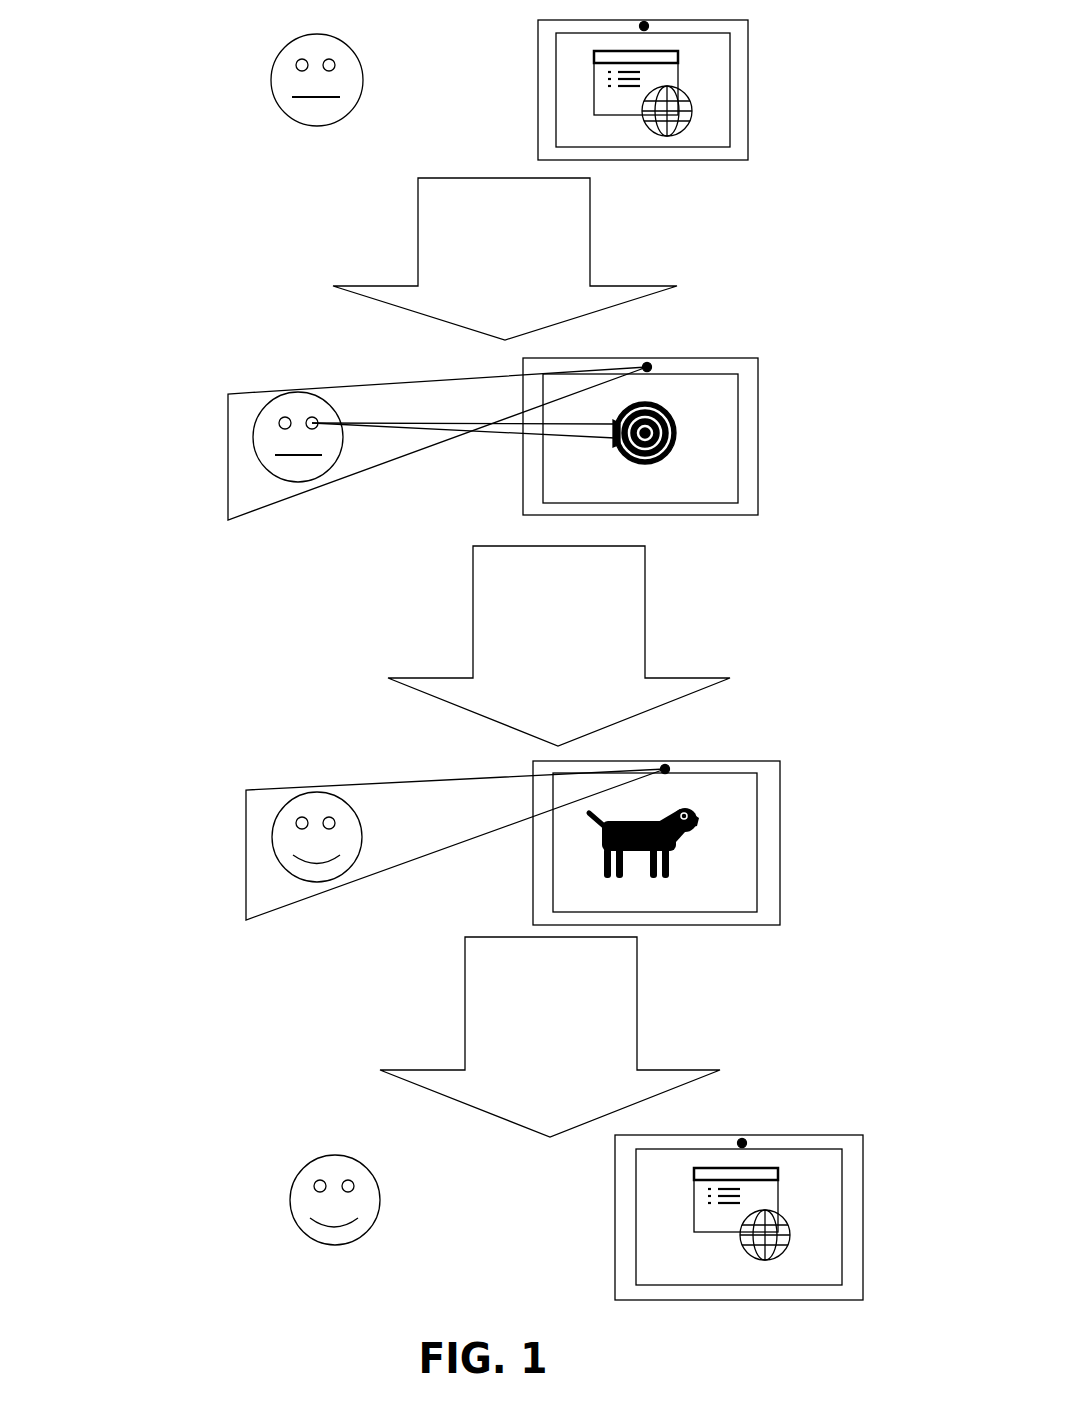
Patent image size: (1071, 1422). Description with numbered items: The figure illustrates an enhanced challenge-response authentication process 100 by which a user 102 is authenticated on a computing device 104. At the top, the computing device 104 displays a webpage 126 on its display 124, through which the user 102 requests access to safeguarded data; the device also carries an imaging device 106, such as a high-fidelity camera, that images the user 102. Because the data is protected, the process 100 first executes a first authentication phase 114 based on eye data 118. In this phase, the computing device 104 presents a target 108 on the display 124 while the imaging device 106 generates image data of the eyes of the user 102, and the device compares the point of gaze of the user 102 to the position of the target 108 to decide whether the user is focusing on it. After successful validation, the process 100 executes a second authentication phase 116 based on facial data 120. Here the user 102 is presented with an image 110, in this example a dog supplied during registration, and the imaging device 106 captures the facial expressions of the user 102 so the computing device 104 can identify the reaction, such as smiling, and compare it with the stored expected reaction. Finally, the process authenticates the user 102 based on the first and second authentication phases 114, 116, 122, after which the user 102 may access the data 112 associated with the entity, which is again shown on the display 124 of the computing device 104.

The enhanced challenge-response authentication process 100 is at (141, 42).
The user 102 is at (298, 42).
The computing device 104 is at (748, 90).
The imaging device 106 is at (644, 26).
The target 108 is at (672, 440).
The image 110 is at (680, 836).
The data 112 is at (770, 1200).
The first authentication phase 114 is at (137, 371).
The second authentication phase 116 is at (140, 797).
The eye data 118 is at (590, 232).
The facial data 120 is at (645, 625).
The authentication based on first and second phases 122 is at (637, 1018).
The display 124 is at (730, 118).
The webpage 126 is at (670, 72).